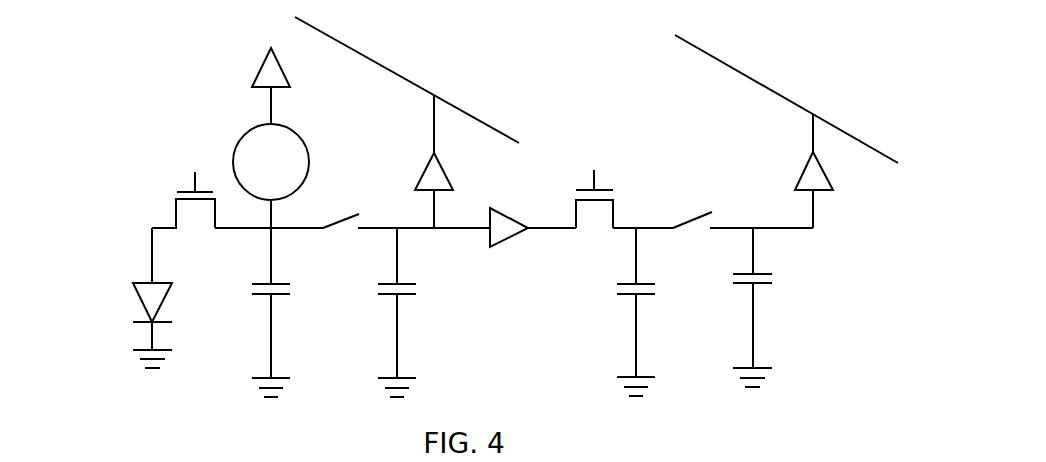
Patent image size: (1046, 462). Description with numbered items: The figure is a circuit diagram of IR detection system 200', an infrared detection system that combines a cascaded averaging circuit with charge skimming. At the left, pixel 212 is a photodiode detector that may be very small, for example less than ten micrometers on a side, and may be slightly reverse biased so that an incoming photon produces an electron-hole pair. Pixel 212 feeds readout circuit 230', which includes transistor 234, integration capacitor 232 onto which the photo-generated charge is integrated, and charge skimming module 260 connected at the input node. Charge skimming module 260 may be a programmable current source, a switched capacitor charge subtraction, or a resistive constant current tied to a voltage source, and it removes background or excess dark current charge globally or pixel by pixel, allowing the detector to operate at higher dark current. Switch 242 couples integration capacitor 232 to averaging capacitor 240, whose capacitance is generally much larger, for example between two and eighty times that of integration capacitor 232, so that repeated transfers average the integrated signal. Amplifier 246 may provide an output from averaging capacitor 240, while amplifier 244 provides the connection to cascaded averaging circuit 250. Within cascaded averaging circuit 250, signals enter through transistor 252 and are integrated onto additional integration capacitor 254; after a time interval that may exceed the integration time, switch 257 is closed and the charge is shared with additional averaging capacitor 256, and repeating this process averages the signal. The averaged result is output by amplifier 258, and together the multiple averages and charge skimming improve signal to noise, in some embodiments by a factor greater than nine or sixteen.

The IR detection system 200' is at (469, 198).
The pixel 212 is at (116, 302).
The readout circuit 230' is at (190, 138).
The integration capacitor 232 is at (245, 290).
The transistor 234 is at (145, 208).
The averaging capacitor 240 is at (423, 309).
The switch 242 is at (345, 234).
The amplifier 244 is at (489, 267).
The amplifier 246 is at (408, 180).
The cascaded averaging circuit 250 is at (591, 77).
The transistor 252 is at (590, 169).
The additional integration capacitor 254 is at (666, 285).
The additional averaging capacitor 256 is at (781, 299).
The switch 257 is at (701, 197).
The amplifier 258 is at (769, 171).
The charge skimming module 260 is at (252, 173).